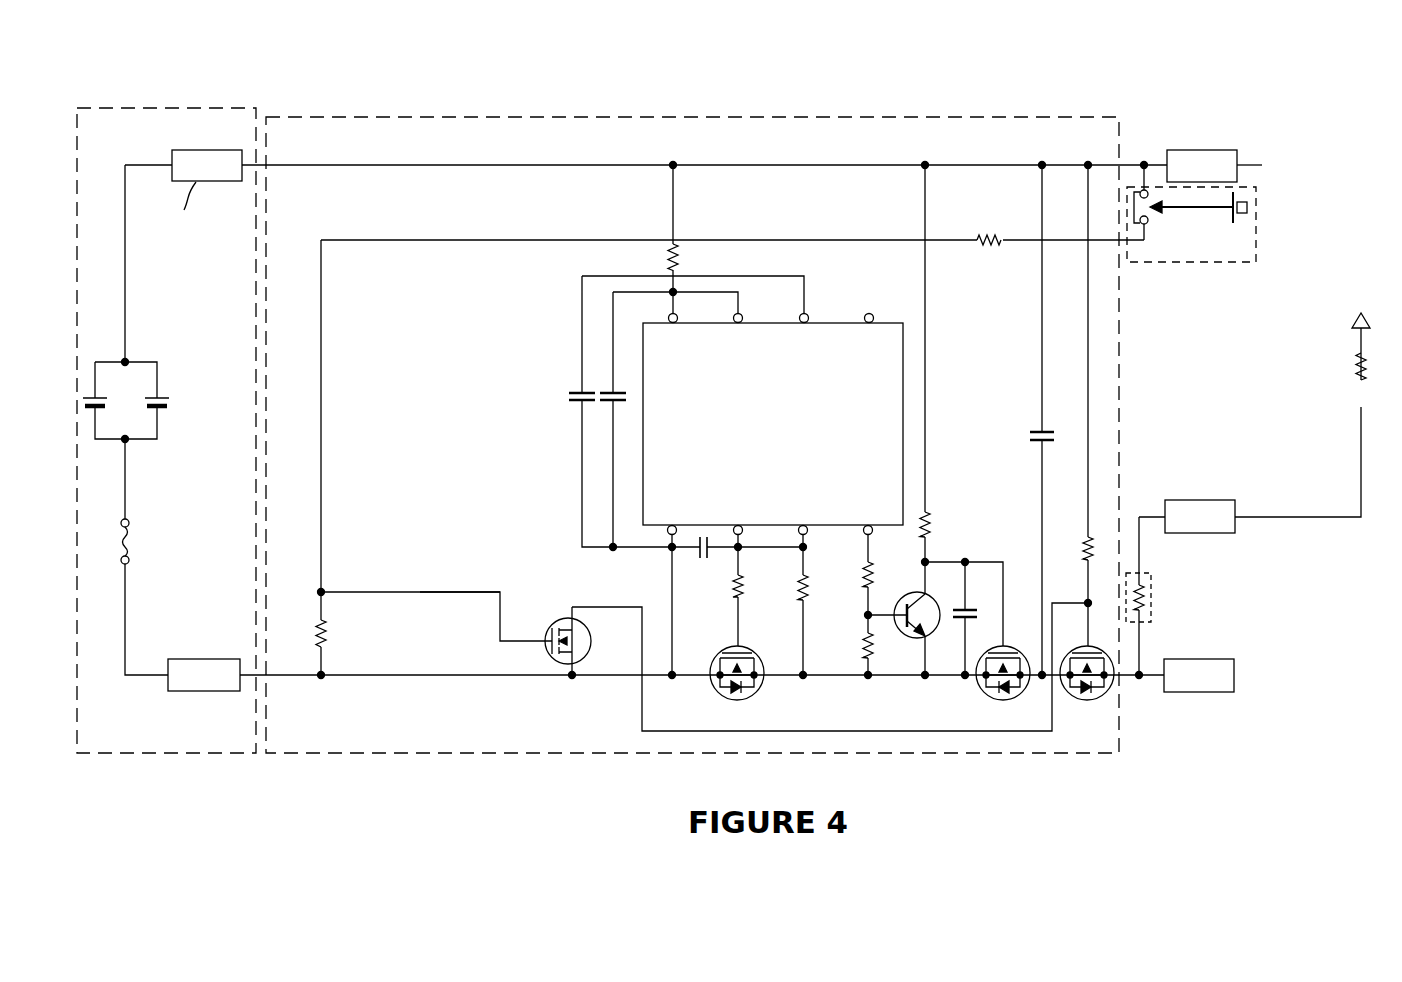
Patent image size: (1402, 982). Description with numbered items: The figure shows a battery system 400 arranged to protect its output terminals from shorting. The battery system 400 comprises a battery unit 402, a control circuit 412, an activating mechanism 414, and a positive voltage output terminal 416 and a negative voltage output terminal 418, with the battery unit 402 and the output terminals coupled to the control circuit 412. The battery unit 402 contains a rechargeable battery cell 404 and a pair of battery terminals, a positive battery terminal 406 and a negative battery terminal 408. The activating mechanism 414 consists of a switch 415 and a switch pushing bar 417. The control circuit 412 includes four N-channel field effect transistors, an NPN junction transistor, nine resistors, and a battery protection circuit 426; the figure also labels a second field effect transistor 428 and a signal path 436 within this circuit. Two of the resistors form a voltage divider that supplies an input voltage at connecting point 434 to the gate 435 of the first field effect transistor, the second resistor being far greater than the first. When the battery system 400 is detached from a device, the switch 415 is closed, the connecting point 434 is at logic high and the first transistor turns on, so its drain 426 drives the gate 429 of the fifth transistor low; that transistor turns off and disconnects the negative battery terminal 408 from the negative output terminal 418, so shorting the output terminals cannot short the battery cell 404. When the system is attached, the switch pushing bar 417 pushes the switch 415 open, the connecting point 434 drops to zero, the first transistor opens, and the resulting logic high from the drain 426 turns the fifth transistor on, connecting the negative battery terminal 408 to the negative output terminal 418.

The battery system 400 is at (1287, 85).
The battery unit 402 is at (118, 108).
The rechargeable battery cell 404 is at (142, 362).
The battery terminal 406 is at (212, 138).
The battery terminal 408 is at (196, 659).
The control circuit 412 is at (1033, 115).
The activating mechanism 414 is at (1257, 207).
The switch 415 is at (1146, 232).
The voltage output terminal 416 is at (1212, 150).
The switch pushing bar 417 is at (1215, 210).
The voltage output terminal 418 is at (1235, 670).
The battery protection circuit 426 is at (835, 322).
The transistor Q2 428 is at (740, 604).
The gate 429 is at (1080, 603).
The connecting point 434 is at (328, 590).
The gate 435 is at (520, 638).
The signal path 436 is at (452, 566).